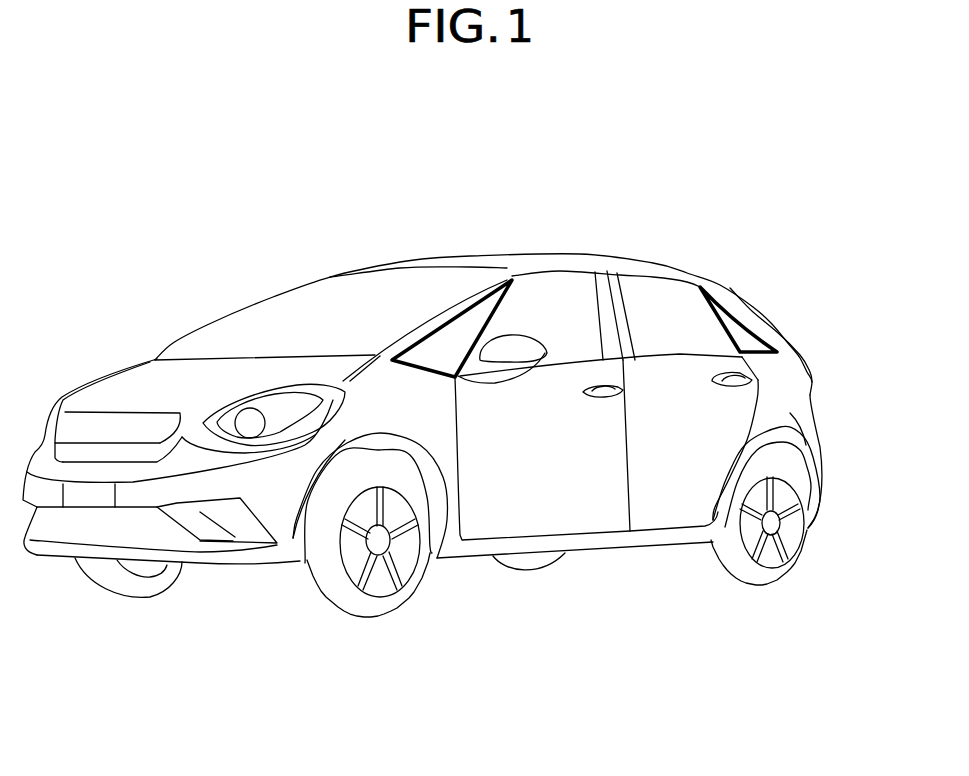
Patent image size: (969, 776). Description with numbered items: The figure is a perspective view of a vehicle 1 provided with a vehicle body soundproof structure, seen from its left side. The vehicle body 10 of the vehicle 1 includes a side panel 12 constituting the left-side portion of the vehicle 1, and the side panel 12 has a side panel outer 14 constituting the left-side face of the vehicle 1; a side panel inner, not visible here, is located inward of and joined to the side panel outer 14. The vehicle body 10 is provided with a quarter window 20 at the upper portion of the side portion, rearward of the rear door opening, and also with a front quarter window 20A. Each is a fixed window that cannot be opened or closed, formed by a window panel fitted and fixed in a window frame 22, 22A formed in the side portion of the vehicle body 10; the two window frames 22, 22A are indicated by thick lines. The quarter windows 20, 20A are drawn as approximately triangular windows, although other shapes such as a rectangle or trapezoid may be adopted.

The vehicle 1 is at (657, 177).
The vehicle body 10 is at (736, 237).
The side panel 12 is at (797, 382).
The side panel outer 14 is at (790, 413).
The quarter window 20 is at (755, 330).
The quarter window 20A is at (455, 327).
The window frame 22 is at (736, 300).
The window frame 22A is at (497, 318).